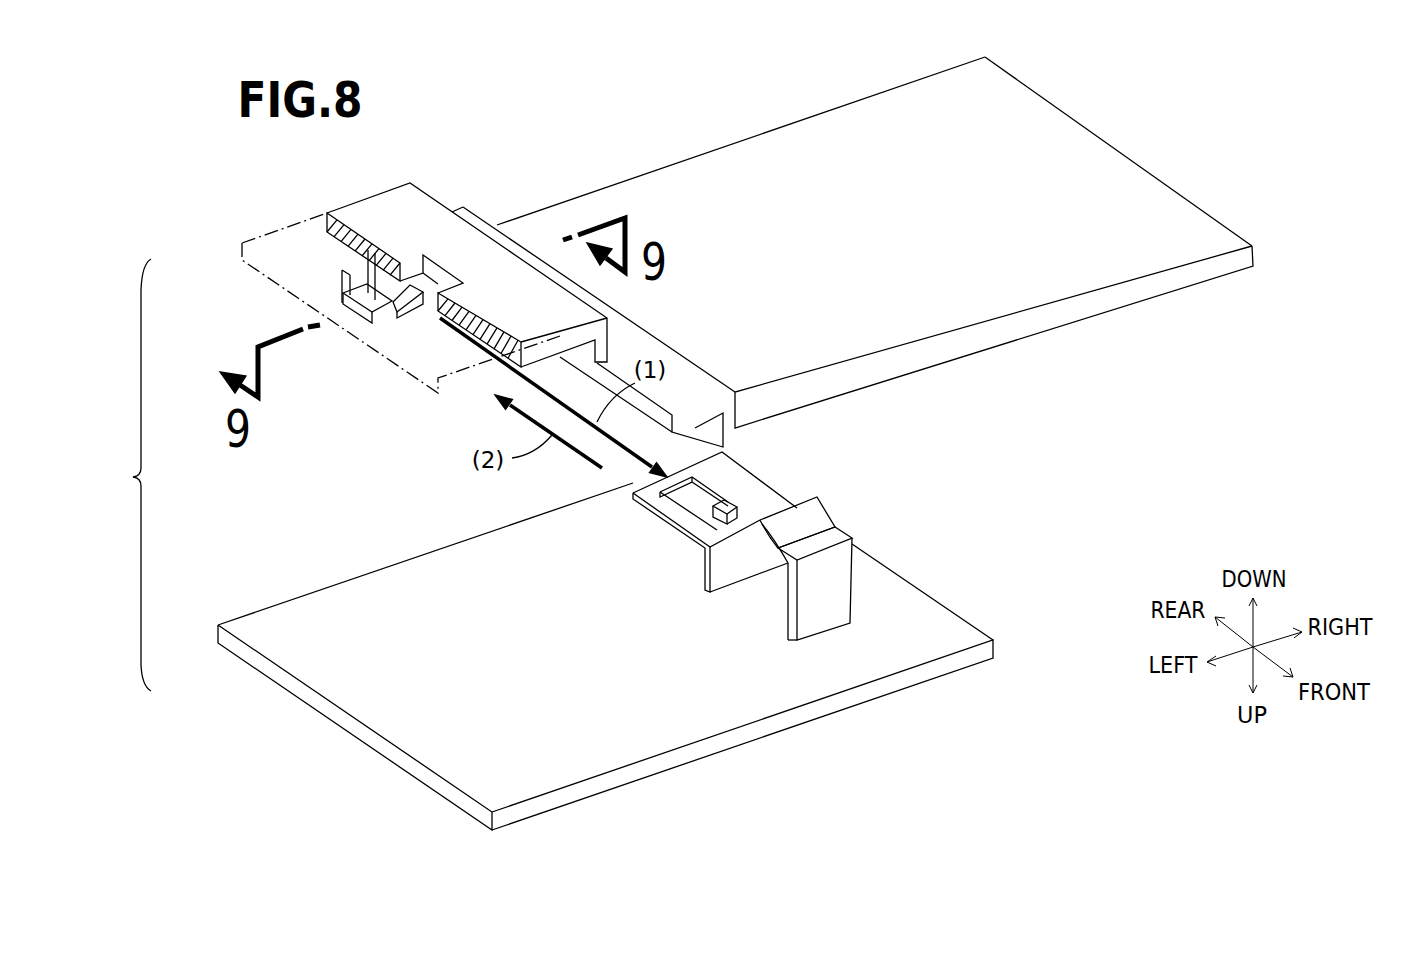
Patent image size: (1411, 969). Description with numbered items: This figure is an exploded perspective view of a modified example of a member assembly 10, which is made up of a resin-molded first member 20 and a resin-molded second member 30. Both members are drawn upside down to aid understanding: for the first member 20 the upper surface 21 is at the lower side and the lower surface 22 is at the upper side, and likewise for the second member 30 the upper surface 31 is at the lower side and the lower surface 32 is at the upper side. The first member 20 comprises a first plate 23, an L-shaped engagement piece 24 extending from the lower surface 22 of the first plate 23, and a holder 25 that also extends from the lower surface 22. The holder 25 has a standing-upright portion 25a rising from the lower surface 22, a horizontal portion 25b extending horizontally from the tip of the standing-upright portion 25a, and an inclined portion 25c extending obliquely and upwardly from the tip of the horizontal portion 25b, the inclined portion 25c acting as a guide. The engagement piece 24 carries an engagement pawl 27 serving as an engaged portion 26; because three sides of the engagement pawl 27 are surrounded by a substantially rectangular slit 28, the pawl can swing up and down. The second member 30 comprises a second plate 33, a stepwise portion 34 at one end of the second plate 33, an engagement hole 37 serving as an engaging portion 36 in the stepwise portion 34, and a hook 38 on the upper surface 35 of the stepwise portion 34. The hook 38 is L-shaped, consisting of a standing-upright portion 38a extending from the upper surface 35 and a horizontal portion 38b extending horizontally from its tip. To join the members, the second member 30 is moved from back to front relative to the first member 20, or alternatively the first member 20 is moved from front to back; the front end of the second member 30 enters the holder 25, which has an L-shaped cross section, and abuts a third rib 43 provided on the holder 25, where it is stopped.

The member assembly 10 is at (124, 475).
The first member 20 is at (605, 674).
The upper surface 21 is at (359, 745).
The lower surface 22 is at (397, 612).
The first plate 23 is at (702, 722).
The engagement piece 24 is at (759, 571).
The holder 25 is at (828, 589).
The standing-upright portion 25a is at (837, 585).
The horizontal portion 25b is at (826, 540).
The inclined portion 25c is at (810, 518).
The engaged portion 26 is at (751, 487).
The engagement pawl 27 is at (730, 502).
The slit 28 is at (675, 503).
The second member 30 is at (755, 252).
The upper surface 31 is at (954, 374).
The lower surface 32 is at (765, 170).
The second plate 33 is at (1065, 165).
The stepwise portion 34 is at (495, 278).
The upper surface 35 is at (335, 248).
The engaging portion 36 is at (451, 211).
The engagement hole 37 is at (437, 273).
The hook 38 is at (386, 313).
The standing-upright portion 38a is at (343, 274).
The horizontal portion 38b is at (350, 312).
The third rib 43 is at (782, 578).